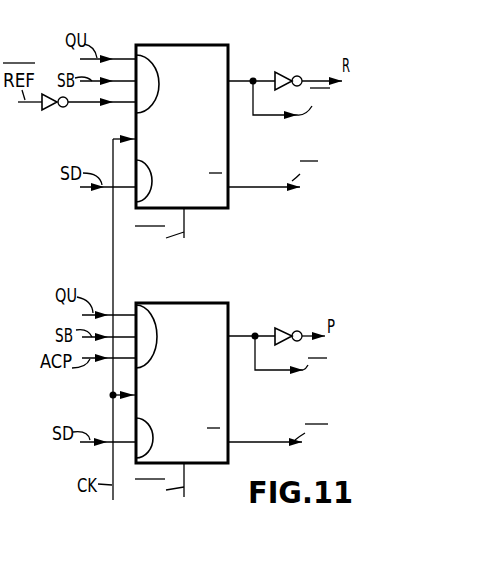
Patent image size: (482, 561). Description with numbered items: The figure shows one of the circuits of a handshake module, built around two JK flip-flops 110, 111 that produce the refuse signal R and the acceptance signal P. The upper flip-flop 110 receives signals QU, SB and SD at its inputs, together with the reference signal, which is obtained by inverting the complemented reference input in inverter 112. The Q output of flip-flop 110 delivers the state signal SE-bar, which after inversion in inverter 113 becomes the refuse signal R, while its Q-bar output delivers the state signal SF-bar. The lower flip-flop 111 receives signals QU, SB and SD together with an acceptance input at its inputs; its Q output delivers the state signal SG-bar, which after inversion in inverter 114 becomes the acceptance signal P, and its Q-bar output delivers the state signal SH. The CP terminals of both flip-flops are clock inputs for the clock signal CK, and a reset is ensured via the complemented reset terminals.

The JK flip-flop 110 is at (200, 140).
The JK flip-flop 111 is at (212, 397).
The inverter 112 is at (50, 110).
The inverter 113 is at (282, 72).
The inverter 114 is at (283, 328).